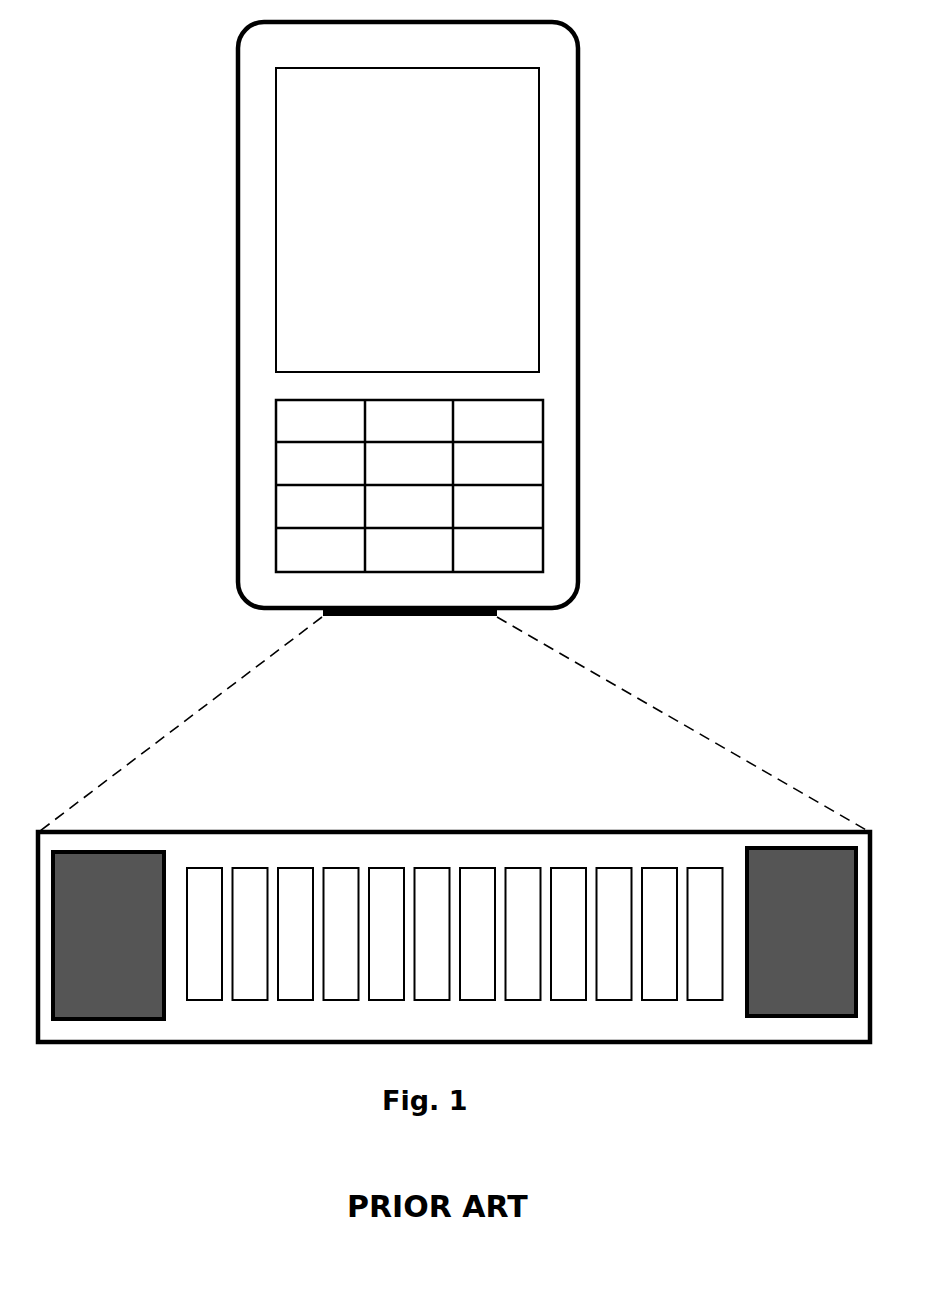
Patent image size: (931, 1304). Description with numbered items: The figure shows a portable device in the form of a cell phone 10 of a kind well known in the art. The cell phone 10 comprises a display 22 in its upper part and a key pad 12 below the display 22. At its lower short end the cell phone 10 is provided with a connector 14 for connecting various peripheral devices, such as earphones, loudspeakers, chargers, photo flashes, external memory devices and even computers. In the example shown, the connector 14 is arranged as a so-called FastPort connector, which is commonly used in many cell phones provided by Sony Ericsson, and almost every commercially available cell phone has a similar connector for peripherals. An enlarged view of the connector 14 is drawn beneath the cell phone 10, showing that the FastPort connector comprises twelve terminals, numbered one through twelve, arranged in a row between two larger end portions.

The cell phone 10 is at (186, 89).
The key pad 12 is at (285, 421).
The connector 14 is at (433, 617).
The display 22 is at (407, 220).